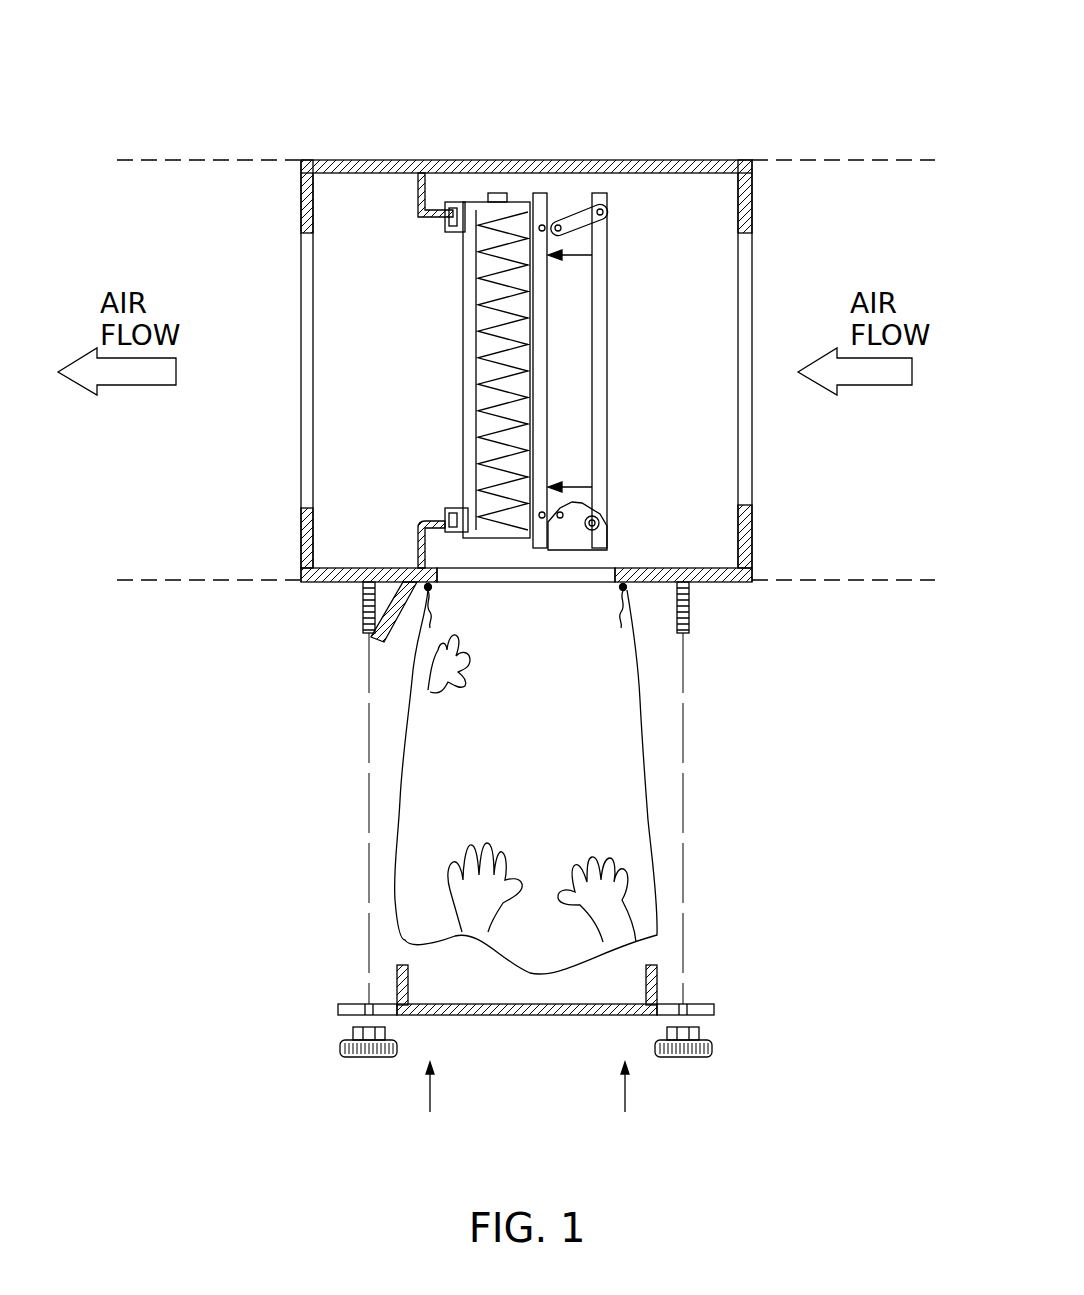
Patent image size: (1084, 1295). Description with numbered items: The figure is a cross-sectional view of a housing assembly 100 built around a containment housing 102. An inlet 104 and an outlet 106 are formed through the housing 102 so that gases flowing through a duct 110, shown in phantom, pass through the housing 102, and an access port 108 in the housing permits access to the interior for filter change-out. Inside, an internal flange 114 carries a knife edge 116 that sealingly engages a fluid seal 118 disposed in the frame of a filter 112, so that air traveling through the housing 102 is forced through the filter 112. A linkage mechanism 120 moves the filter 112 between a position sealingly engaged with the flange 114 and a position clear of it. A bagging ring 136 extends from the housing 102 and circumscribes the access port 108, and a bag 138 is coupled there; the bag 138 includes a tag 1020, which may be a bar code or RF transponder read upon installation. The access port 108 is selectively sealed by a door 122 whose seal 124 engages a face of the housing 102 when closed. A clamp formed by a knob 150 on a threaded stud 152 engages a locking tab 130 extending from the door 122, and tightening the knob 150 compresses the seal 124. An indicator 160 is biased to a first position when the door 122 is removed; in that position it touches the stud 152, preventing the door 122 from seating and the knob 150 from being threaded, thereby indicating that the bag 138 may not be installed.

The housing assembly 100 is at (494, 56).
The containment housing 102 is at (525, 404).
The inlet 104 is at (752, 268).
The outlet 106 is at (300, 296).
The access port 108 is at (567, 582).
The duct 110 is at (175, 158).
The filter 112 is at (465, 360).
The internal flange 114 is at (418, 205).
The knife edge 116 is at (435, 222).
The fluid seal 118 is at (470, 197).
The tag 1020 is at (495, 193).
The linkage mechanism 120 is at (607, 338).
The door 122 is at (490, 1016).
The seal 124 is at (660, 975).
The locking tab 130 is at (340, 1004).
The bagging ring 136 is at (435, 601).
The bag 138 is at (400, 897).
The knob 150 is at (340, 1057).
The threaded stud 152 is at (365, 600).
The indicator 160 is at (398, 640).